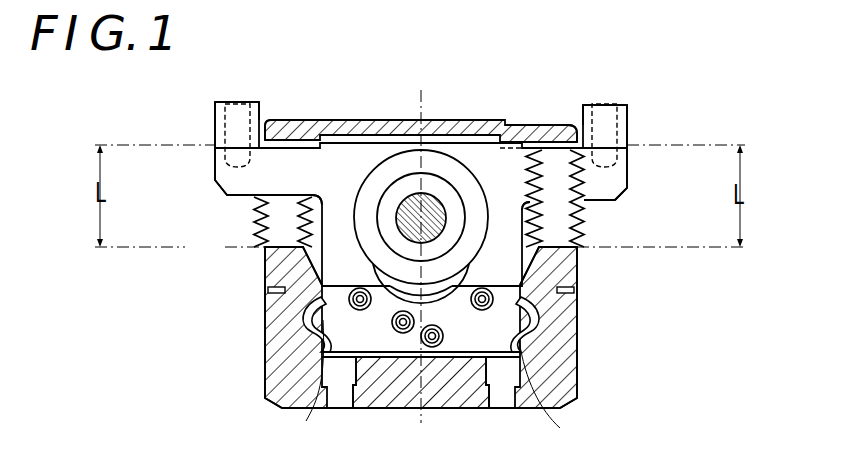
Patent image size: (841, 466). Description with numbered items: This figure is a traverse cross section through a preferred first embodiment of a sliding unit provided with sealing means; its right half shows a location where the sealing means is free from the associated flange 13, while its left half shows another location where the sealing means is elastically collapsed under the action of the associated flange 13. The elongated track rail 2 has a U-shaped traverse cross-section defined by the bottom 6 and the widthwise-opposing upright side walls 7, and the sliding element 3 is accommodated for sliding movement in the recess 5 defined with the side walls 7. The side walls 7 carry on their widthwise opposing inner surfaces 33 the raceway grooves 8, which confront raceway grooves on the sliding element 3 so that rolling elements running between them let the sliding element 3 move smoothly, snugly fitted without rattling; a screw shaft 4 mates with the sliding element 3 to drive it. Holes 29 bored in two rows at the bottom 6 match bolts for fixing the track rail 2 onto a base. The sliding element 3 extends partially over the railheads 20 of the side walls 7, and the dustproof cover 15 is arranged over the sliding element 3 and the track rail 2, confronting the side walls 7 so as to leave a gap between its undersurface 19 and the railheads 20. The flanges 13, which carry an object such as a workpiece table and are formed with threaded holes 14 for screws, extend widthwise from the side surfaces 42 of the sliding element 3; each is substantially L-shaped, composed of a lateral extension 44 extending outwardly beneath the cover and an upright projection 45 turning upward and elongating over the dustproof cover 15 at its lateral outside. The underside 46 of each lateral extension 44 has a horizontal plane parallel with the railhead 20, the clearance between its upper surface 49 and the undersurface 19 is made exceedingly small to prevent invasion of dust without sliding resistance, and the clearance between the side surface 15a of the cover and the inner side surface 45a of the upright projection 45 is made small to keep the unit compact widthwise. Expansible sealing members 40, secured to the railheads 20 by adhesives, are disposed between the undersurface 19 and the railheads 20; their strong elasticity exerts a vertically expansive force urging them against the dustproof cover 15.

The track rail 2 is at (591, 403).
The sliding element 3 is at (497, 163).
The screw shaft 4 is at (403, 207).
The U-shaped recess 5 is at (453, 347).
The bottom 6 is at (405, 387).
The side walls 7 is at (287, 312).
The raceway grooves 8 is at (263, 355).
The flanges 13 is at (215, 168).
The threaded holes 14 is at (234, 112).
The dustproof cover 15 is at (477, 120).
The side surface of dustproof cover 15a is at (268, 124).
The undersurface 19 is at (307, 123).
The railheads 20 is at (267, 250).
The holes 29 is at (340, 400).
The inner surfaces 33 is at (567, 47).
The expansible sealing members 40 is at (251, 227).
The side surfaces 42 is at (275, 290).
The lateral extension 44 is at (277, 178).
The upright projection 45 is at (217, 133).
The inner side surface 45a is at (265, 127).
The underside 46 is at (250, 197).
The upper surface 49 is at (324, 126).